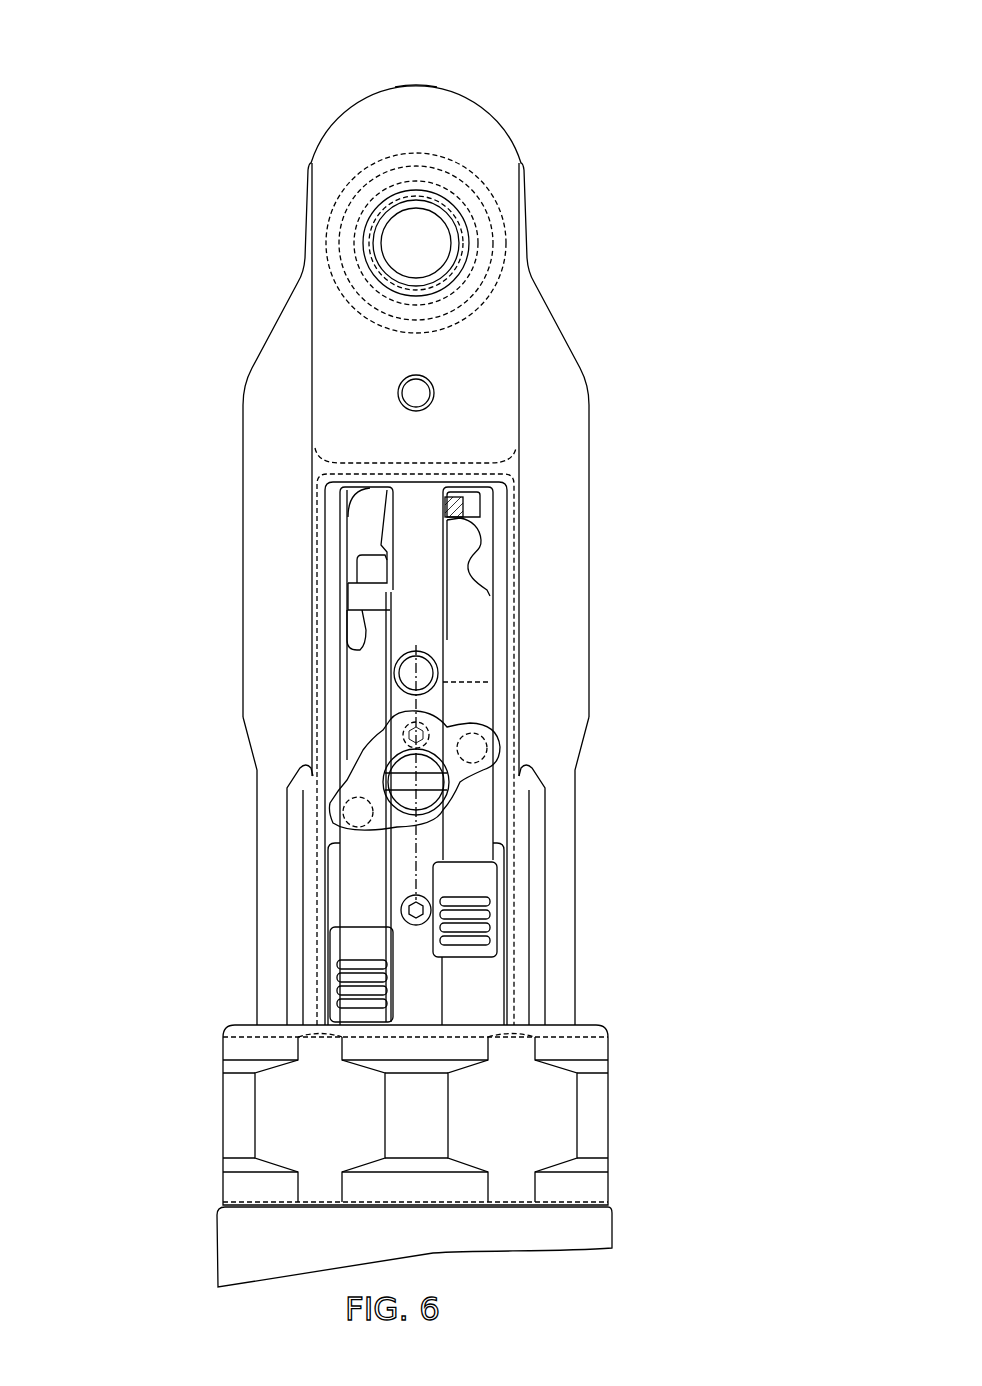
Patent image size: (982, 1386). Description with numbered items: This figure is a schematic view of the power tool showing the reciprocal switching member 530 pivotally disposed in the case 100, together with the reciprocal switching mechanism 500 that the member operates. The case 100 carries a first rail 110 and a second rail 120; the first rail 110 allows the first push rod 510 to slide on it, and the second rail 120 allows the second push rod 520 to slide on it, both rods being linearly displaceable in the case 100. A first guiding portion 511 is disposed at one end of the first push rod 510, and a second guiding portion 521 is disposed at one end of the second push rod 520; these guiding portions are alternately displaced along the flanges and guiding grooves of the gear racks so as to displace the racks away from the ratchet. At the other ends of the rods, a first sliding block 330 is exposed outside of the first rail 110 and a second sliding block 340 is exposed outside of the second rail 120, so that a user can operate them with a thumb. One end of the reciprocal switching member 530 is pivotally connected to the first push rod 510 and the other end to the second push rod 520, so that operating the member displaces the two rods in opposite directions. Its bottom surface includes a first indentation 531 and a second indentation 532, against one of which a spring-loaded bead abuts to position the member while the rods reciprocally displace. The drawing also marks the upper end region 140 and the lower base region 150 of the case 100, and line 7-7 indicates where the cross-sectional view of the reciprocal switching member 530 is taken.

The case 100 is at (482, 108).
The first rail 110 is at (347, 507).
The second rail 120 is at (487, 507).
The top end portion 140 is at (416, 86).
The base 150 is at (605, 1025).
The first sliding block 330 is at (337, 943).
The second sliding block 340 is at (477, 880).
The reciprocal switching mechanism 500 is at (710, 492).
The first push rod 510 is at (358, 667).
The first guiding portion 511 is at (380, 563).
The second push rod 520 is at (460, 612).
The second guiding portion 521 is at (457, 505).
The reciprocal switching member 530 is at (345, 830).
The first indentation 531 is at (392, 776).
The second indentation 532 is at (390, 716).
The line 7- 7 is at (417, 605).